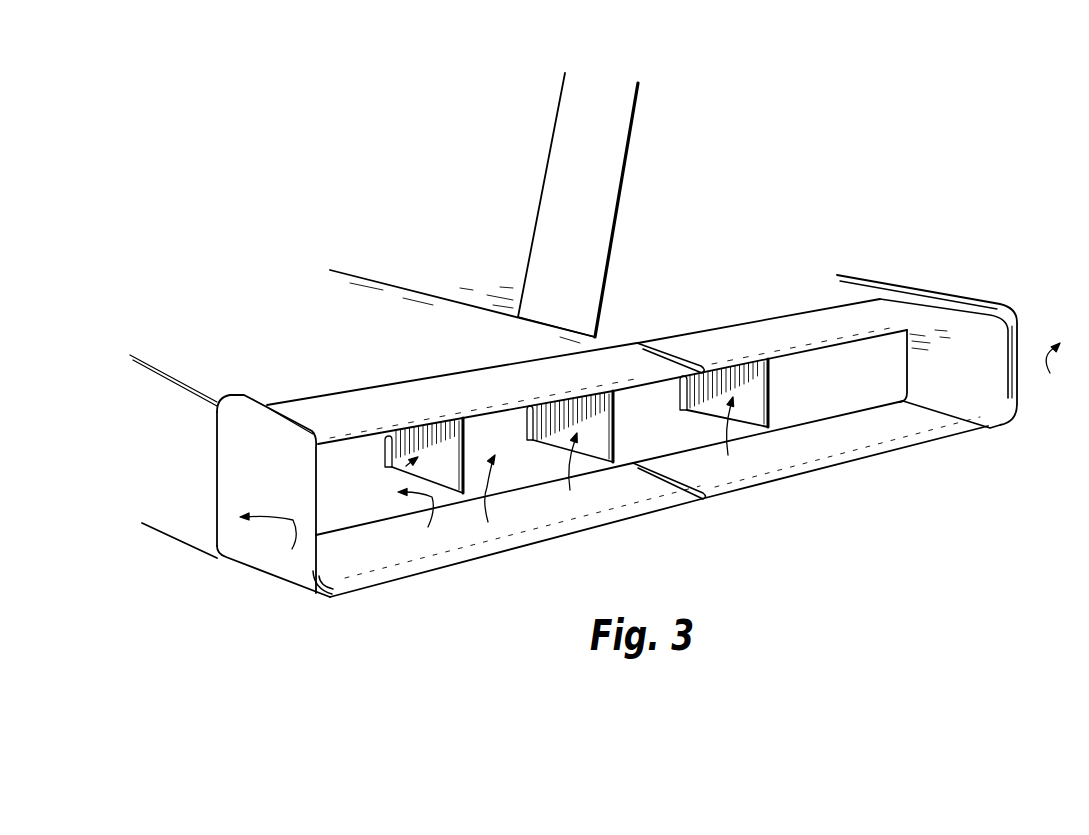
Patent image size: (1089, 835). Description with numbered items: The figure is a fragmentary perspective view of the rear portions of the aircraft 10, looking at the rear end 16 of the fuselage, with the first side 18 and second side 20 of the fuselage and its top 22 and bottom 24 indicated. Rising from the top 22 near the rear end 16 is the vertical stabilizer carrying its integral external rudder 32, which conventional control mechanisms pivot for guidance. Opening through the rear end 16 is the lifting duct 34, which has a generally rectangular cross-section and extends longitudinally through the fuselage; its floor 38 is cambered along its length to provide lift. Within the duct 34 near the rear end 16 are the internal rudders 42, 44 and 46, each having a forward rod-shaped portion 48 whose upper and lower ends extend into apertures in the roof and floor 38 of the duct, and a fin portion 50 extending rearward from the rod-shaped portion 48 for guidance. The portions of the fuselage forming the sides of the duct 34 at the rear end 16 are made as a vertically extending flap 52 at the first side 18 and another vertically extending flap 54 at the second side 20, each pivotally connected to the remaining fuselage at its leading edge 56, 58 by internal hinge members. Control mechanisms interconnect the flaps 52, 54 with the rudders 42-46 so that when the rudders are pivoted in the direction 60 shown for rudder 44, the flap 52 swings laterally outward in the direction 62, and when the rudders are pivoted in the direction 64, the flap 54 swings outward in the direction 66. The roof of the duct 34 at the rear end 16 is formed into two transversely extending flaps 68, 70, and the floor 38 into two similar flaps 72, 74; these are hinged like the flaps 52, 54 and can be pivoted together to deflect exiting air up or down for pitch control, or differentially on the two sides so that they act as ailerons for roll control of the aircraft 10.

The aircraft 10 is at (693, 192).
The rear end 16 is at (896, 459).
The first side 18 is at (160, 420).
The second side 20 is at (968, 293).
The top 22 is at (326, 338).
The bottom 24 is at (174, 543).
The external rudder 32 is at (552, 215).
The lifting duct 34 is at (812, 364).
The floor 38 is at (330, 513).
The internal rudder 42 is at (573, 453).
The internal rudder 44 is at (402, 471).
The internal rudder 46 is at (727, 419).
The rod-shaped portion 48 is at (386, 442).
The fin portion 50 is at (460, 436).
The vertically extending flap 52 is at (243, 475).
The vertically extending flap 54 is at (949, 368).
The leading edge 56 is at (217, 472).
The leading edge 58 is at (906, 357).
The pivoting direction 60 is at (413, 516).
The pivoting direction 62 is at (268, 538).
The pivoting direction 64 is at (480, 499).
The pivoting direction 66 is at (1064, 364).
The transversely extending flap 68 is at (441, 383).
The transversely extending flap 70 is at (788, 328).
The transversely extending flap 72 is at (368, 572).
The transversely extending flap 74 is at (815, 456).